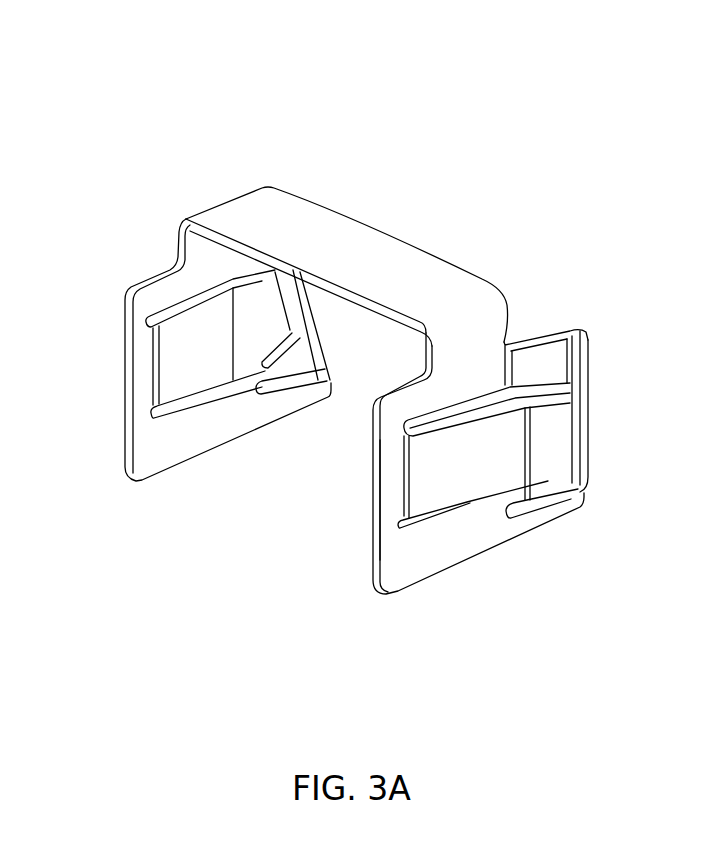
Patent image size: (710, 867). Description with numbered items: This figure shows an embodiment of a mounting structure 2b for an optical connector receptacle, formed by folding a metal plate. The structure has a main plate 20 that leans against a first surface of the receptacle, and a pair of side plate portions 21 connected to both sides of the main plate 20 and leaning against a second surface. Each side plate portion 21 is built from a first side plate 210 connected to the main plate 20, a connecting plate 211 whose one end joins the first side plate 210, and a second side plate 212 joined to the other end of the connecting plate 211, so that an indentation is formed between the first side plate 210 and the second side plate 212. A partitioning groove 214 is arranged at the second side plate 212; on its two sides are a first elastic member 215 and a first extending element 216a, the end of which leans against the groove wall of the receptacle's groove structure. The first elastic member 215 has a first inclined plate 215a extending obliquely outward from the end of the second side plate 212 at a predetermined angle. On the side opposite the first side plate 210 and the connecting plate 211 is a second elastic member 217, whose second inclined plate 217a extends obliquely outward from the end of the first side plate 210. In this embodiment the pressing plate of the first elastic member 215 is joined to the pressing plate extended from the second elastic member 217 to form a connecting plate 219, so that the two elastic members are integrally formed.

The mounting structure 2b is at (410, 409).
The main plate 20 is at (382, 232).
The side plate portion 21 is at (399, 591).
The first side plate 210 is at (438, 390).
The connecting plate 211 is at (390, 494).
The second side plate 212 is at (450, 562).
The partitioning groove 214 is at (518, 508).
The first elastic member 215 is at (578, 492).
The first inclined plate 215a is at (547, 482).
The first extending element 216a is at (538, 520).
The second elastic member 217 is at (547, 332).
The second inclined plate 217a is at (530, 358).
The connecting plate 219 is at (578, 412).